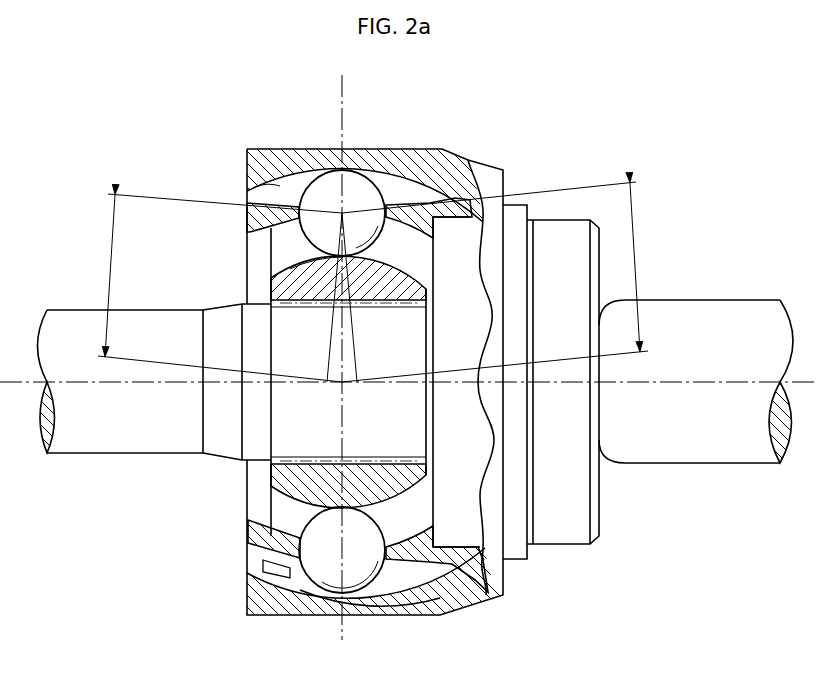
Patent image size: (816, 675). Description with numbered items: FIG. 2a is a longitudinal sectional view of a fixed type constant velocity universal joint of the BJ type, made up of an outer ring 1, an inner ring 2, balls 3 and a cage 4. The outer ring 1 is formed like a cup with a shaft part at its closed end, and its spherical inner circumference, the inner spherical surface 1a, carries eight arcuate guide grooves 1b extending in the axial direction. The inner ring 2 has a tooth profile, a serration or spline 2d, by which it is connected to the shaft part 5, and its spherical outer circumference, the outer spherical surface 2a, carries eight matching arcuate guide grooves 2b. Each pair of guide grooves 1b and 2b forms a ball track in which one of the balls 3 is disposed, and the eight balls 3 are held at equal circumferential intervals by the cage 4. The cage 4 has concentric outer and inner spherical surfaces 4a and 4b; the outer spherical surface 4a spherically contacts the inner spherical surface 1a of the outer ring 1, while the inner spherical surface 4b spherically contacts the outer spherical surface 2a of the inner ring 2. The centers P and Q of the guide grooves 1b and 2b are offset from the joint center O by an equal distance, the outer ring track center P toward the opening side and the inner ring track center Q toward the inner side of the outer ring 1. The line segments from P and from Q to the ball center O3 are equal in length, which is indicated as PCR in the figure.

The outer ring 1 is at (243, 153).
The inner spherical surface 1a is at (408, 570).
The guide grooves 1b is at (262, 197).
The inner ring 2 is at (262, 252).
The outer spherical surface 2a is at (440, 565).
The guide grooves 2b is at (292, 268).
The tooth profile 2d is at (412, 308).
The balls 3 is at (312, 170).
The cage 4 is at (408, 198).
The outer spherical surface 4a is at (288, 576).
The inner spherical surface 4b is at (288, 535).
The shaft part 5 is at (58, 312).
The joint center O is at (328, 396).
The center of the ball O3 is at (342, 212).
The outer ring track center P is at (322, 380).
The inner ring track center Q is at (360, 380).
The pitch circle radius PCR is at (368, 254).